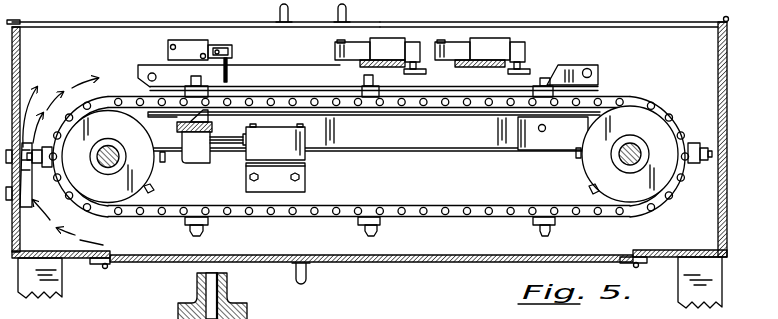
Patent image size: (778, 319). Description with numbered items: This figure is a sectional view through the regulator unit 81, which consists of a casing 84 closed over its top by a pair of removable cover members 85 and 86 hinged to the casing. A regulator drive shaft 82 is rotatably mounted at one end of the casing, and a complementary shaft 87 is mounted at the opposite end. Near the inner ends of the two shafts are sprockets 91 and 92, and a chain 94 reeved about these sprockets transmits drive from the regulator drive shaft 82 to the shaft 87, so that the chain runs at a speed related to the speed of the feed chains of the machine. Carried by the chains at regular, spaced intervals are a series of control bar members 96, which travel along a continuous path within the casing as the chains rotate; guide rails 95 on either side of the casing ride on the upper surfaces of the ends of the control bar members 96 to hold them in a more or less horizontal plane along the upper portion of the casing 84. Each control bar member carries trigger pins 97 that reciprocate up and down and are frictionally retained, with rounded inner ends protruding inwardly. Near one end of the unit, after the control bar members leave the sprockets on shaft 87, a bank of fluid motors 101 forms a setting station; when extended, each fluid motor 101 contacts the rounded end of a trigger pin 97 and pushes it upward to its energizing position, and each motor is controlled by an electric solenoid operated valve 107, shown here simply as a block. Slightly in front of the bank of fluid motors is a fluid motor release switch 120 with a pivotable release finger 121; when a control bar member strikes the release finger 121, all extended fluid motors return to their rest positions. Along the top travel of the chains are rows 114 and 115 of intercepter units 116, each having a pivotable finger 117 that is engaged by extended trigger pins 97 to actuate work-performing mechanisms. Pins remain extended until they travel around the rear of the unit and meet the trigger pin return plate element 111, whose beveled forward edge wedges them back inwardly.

The regulator unit 81 is at (730, 118).
The regulator drive shaft 82 is at (626, 162).
The casing 84 is at (393, 262).
The removable cover member 85 is at (120, 26).
The removable cover member 86 is at (580, 24).
The complementary shaft 87 is at (108, 160).
The sprocket 91 is at (155, 190).
The sprocket 92 is at (588, 188).
The chain 94 is at (113, 95).
The guide rail 95 is at (290, 72).
The control bar member 96 is at (555, 90).
The trigger pin 97 is at (548, 78).
The fluid motor 101 is at (198, 150).
The electric solenoid operated valve 107 is at (304, 155).
The trigger pin return plate element 111 is at (61, 151).
The row of intercepter units 114 is at (388, 38).
The row of intercepter units 115 is at (492, 38).
The intercepter unit 116 is at (411, 42).
The pivotable finger 117 is at (508, 72).
The fluid motor release switch 120 is at (190, 40).
The release finger 121 is at (230, 68).